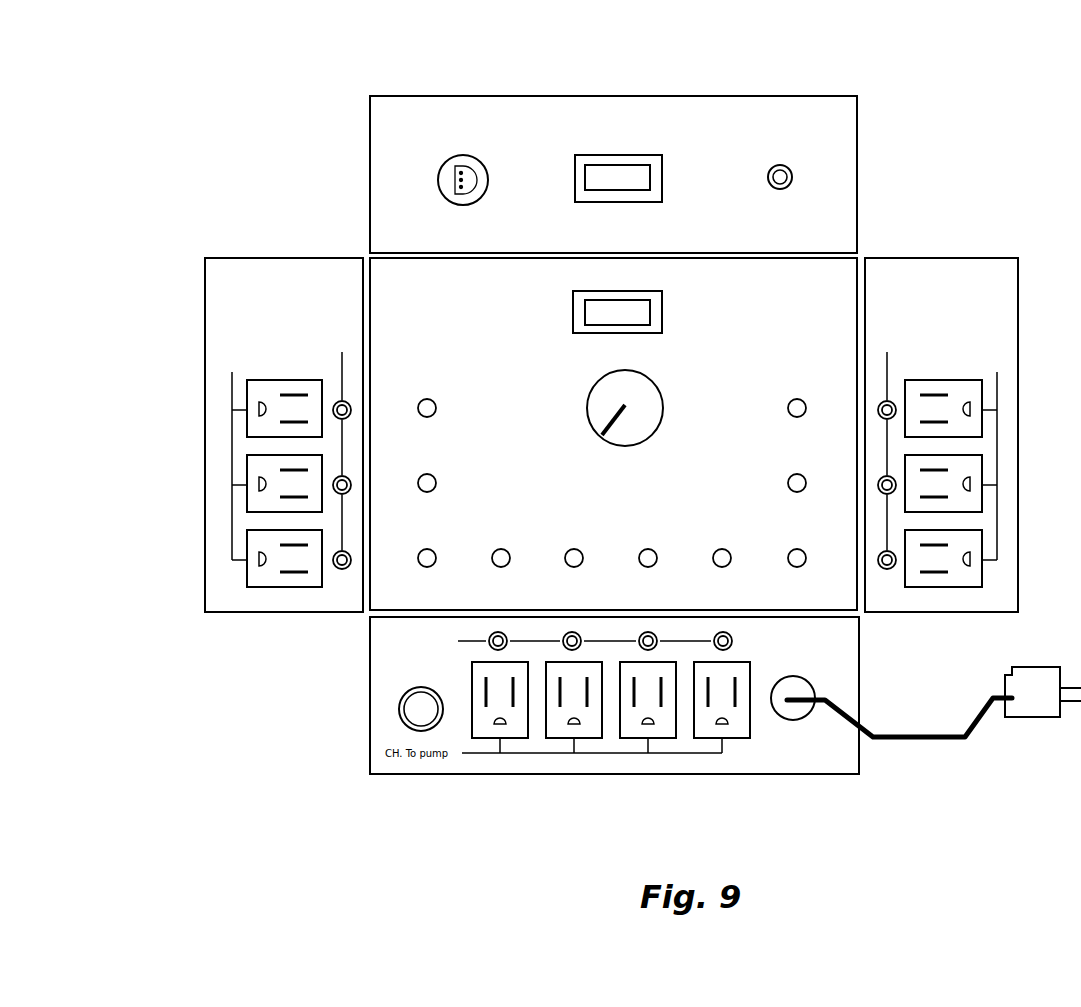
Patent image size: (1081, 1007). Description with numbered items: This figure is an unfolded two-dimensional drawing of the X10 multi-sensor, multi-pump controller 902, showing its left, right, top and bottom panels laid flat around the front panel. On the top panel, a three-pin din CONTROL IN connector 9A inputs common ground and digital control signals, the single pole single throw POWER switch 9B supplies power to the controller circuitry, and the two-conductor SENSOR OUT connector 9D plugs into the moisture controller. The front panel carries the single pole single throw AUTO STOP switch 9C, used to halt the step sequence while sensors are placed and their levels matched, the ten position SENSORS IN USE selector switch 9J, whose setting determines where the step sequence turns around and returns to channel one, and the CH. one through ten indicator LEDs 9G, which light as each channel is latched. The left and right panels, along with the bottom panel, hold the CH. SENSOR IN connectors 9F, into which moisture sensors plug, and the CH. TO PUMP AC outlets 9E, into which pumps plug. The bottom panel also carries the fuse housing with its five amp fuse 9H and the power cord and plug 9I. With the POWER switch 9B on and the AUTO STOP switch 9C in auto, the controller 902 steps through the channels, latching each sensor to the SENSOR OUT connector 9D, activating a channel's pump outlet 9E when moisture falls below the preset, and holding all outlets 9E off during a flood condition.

The X10 controller 902 is at (397, 286).
The 3-pin din connector 9A is at (437, 180).
The POWER switch 9B is at (575, 170).
The AUTO STOP switch 9C is at (662, 293).
The SENSOR OUT connector 9D is at (793, 177).
The CH. TO PUMP AC outlets 9E is at (280, 380).
The CH. SENSOR IN connectors 9F is at (338, 400).
The CH. 1 through 10 LEDs 9G is at (437, 408).
The fuse housing and five amp fuse 9H is at (398, 709).
The power cord and plug 9I is at (1000, 687).
The SENSORS IN USE selector switch 9J is at (657, 385).